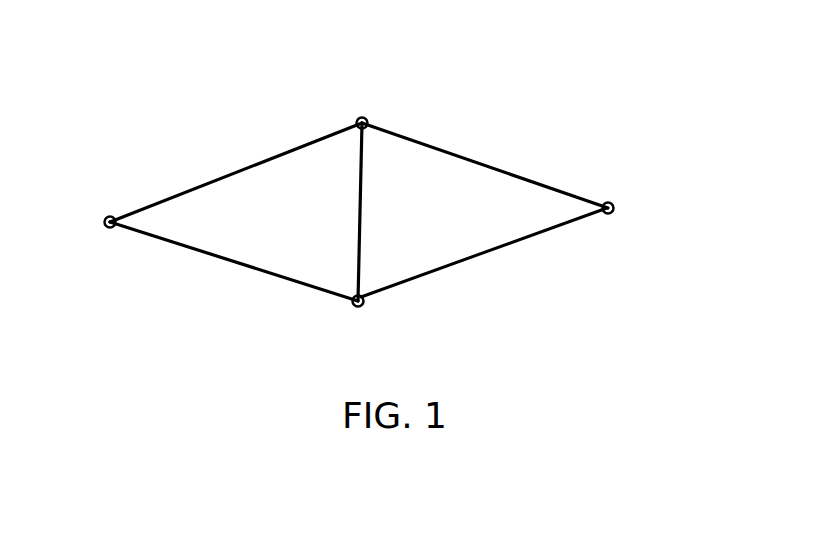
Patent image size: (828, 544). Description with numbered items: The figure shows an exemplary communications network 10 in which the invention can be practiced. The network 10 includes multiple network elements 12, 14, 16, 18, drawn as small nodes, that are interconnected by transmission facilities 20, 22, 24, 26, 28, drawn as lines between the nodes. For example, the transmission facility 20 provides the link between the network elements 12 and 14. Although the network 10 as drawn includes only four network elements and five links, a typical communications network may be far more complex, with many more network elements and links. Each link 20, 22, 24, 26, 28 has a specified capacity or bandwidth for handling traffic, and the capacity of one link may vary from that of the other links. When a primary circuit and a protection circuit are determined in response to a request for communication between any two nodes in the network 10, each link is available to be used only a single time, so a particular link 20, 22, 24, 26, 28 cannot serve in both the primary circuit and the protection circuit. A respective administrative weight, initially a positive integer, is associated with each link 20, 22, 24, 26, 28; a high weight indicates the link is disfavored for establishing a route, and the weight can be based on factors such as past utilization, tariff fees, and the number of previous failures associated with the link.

The communications network 10 is at (536, 94).
The network element 12 is at (100, 223).
The network element 14 is at (358, 115).
The network element 16 is at (357, 307).
The network element 18 is at (615, 215).
The transmission facility 20 is at (188, 188).
The transmission facility 22 is at (257, 272).
The transmission facility 24 is at (353, 222).
The transmission facility 26 is at (493, 168).
The transmission facility 28 is at (453, 263).